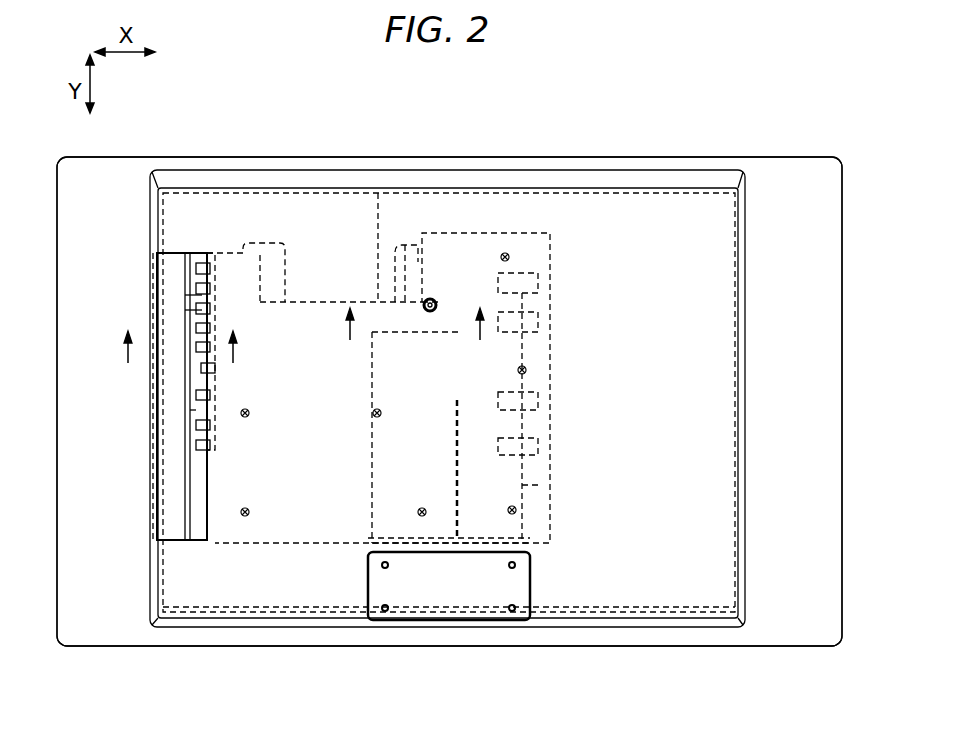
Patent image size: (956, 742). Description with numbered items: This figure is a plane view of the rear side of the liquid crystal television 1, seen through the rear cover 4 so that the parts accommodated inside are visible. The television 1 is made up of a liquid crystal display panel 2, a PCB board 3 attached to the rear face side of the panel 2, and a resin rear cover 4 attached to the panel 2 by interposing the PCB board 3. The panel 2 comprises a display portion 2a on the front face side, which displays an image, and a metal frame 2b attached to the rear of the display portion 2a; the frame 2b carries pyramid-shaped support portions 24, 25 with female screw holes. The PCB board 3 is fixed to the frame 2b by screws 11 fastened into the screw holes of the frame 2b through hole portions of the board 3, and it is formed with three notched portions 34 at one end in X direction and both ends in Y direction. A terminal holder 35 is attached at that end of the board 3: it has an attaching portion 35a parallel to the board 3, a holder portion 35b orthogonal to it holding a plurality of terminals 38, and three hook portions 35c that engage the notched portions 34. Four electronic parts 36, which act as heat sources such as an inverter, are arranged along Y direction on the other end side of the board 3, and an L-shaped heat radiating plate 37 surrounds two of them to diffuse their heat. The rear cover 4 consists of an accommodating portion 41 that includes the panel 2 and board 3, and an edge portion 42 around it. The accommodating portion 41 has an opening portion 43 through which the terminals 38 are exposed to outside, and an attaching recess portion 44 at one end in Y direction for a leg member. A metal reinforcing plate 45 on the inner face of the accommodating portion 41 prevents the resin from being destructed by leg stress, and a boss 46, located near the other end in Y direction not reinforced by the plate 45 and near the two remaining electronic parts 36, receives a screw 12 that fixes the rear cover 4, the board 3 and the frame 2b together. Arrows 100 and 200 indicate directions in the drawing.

The liquid crystal television 1 is at (790, 148).
The liquid crystal display panel 2 is at (722, 525).
The display portion 2a is at (661, 598).
The frame 2b is at (707, 575).
The PCB board 3 is at (525, 247).
The rear cover 4 is at (805, 598).
The screws 11 is at (288, 300).
The screw 12 is at (432, 300).
The support portion 24 is at (272, 245).
The support portion 25 is at (381, 197).
The notched portions 34 is at (218, 253).
The terminal holder 35 is at (183, 462).
The attaching portion 35a is at (202, 280).
The holder portion 35b is at (203, 487).
The hook portions 35c is at (228, 252).
The electronic parts 36 is at (548, 310).
The heat radiating plate 37 is at (447, 545).
The terminals 38 is at (202, 310).
The accommodating portion 41 is at (682, 217).
The edge portion 42 is at (767, 192).
The opening portion 43 is at (202, 295).
The attaching recess portion 44 is at (408, 580).
The reinforcing plate 45 is at (528, 485).
The boss 46 is at (440, 298).
The direction 100 is at (180, 362).
The direction 200 is at (415, 339).